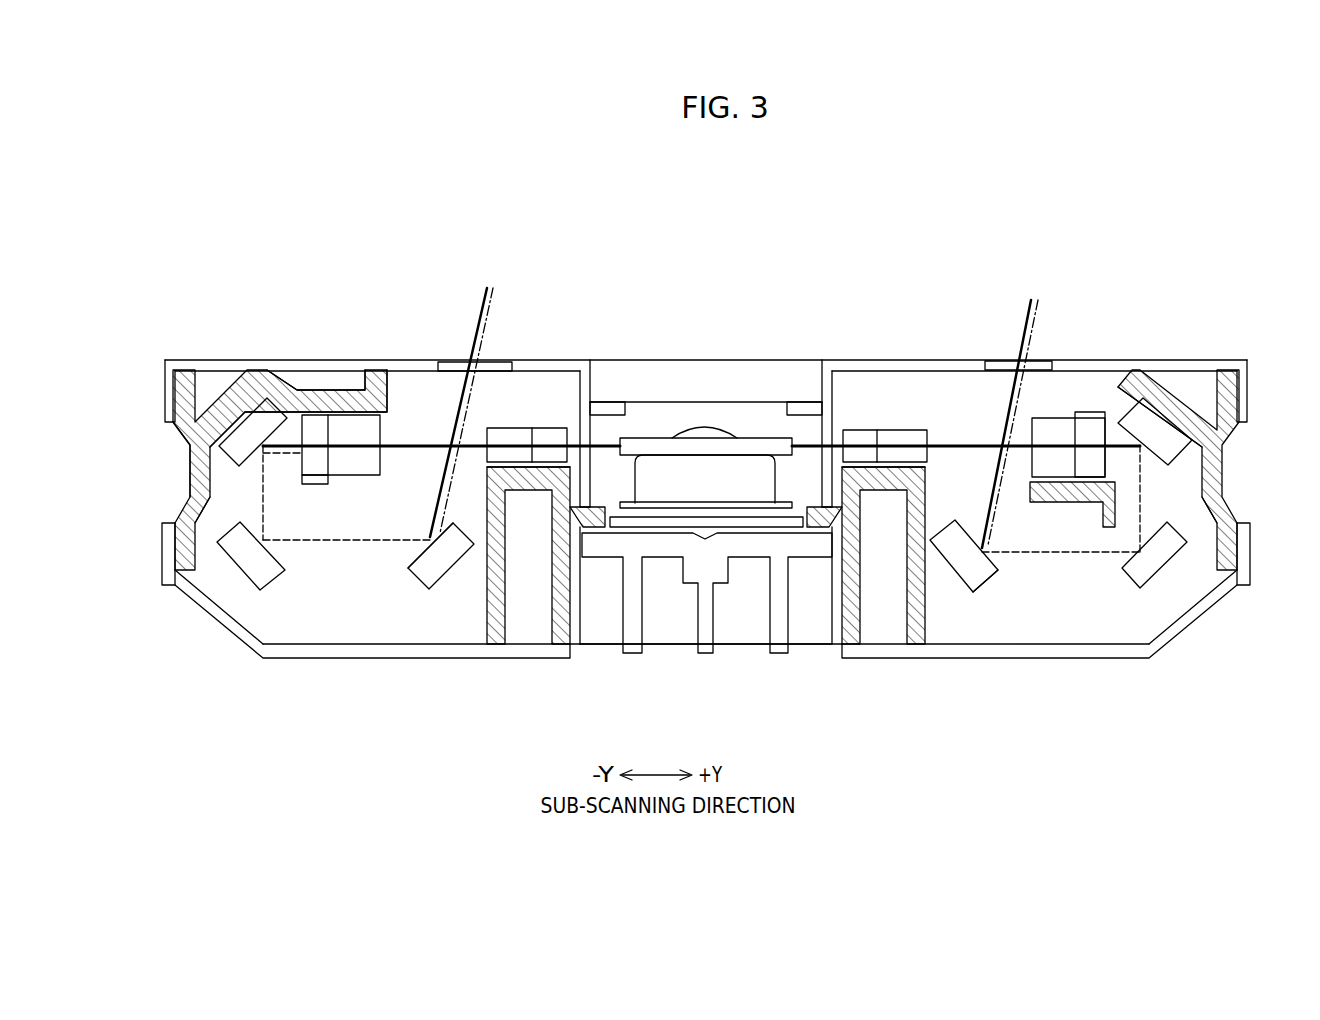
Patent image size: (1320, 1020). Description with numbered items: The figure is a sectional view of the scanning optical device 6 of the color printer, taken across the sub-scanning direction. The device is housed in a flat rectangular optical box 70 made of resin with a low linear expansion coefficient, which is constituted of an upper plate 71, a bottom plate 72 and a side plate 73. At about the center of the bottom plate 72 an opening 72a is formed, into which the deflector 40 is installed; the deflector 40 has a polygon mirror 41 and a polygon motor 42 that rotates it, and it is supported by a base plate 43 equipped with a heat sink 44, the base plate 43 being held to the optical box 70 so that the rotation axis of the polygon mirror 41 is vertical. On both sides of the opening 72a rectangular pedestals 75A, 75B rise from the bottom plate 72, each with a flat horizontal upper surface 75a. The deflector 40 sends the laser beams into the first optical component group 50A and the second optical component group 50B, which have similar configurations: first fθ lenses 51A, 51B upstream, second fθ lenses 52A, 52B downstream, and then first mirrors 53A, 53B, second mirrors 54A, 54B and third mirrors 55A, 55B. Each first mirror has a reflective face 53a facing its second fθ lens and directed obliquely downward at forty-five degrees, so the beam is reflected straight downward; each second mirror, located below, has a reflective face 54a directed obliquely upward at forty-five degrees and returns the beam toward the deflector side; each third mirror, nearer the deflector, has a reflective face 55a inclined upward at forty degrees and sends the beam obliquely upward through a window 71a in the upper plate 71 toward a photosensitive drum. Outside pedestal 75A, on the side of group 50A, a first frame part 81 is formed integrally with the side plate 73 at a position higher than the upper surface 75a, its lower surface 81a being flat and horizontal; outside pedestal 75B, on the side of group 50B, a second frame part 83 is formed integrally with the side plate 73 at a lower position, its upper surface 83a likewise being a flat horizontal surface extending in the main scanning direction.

The scanning optical device 6 is at (577, 290).
The deflector 40 is at (661, 430).
The polygon mirror 41 is at (737, 440).
The polygon motor 42 is at (745, 470).
The base plate 43 is at (756, 527).
The heat sink 44 is at (818, 548).
The first optical component group 50A is at (367, 300).
The second optical component group 50B is at (1128, 300).
The first fθ lens 51A is at (543, 428).
The first fθ lens 51B is at (868, 430).
The second fθ lens 52A is at (320, 390).
The second fθ lens 52B is at (1088, 412).
The first mirror 53A is at (238, 398).
The first mirror 53B is at (1165, 400).
The reflective face 53a is at (213, 462).
The second mirror 54A is at (240, 575).
The second mirror 54B is at (1163, 570).
The reflective face 54a is at (196, 505).
The third mirror 55A is at (437, 592).
The third mirror 55B is at (952, 576).
The reflective face 55a is at (404, 555).
The optical box 70 is at (213, 360).
The upper plate 71 is at (186, 370).
The window 71a is at (474, 352).
The bottom plate 72 is at (327, 660).
The opening 72a is at (584, 650).
The side plate 73 is at (198, 436).
The pedestal 75A is at (536, 494).
The pedestal 75B is at (886, 492).
The upper surface 75a is at (490, 464).
The first frame part 81 is at (372, 412).
The lower surface 81a is at (386, 414).
The second frame part 83 is at (1070, 502).
The upper surface 83a is at (1094, 478).